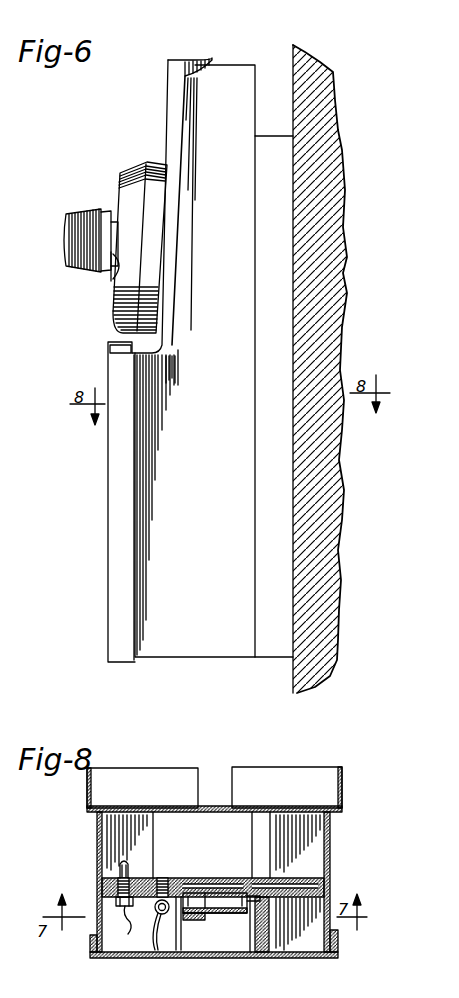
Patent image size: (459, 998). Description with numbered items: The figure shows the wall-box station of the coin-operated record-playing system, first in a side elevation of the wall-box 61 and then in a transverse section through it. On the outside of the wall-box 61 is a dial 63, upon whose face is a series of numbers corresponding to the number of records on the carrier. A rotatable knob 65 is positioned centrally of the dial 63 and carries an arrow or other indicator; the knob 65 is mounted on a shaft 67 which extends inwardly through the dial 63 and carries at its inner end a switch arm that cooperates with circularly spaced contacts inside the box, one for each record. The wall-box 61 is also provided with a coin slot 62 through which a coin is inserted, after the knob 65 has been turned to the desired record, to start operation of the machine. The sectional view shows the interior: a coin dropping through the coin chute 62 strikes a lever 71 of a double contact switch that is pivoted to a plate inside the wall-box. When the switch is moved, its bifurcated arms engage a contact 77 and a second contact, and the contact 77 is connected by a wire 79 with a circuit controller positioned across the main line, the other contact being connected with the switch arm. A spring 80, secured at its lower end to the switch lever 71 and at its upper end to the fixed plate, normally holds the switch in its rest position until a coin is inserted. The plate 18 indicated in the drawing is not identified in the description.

In FIG. 8, the plate 18 is at (162, 880).
In FIG. 6, the wall-box 61 is at (106, 341).
In FIG. 8, the coin slot 62 is at (228, 915).
In FIG. 6, the dial 63 is at (121, 180).
In FIG. 6, the rotatable knob 65 is at (66, 234).
In FIG. 6, the shaft 67 is at (113, 284).
In FIG. 8, the lever 71 is at (190, 921).
In FIG. 8, the contact 77 is at (118, 923).
In FIG. 8, the wire 79 is at (131, 863).
In FIG. 8, the spring 80 is at (156, 914).